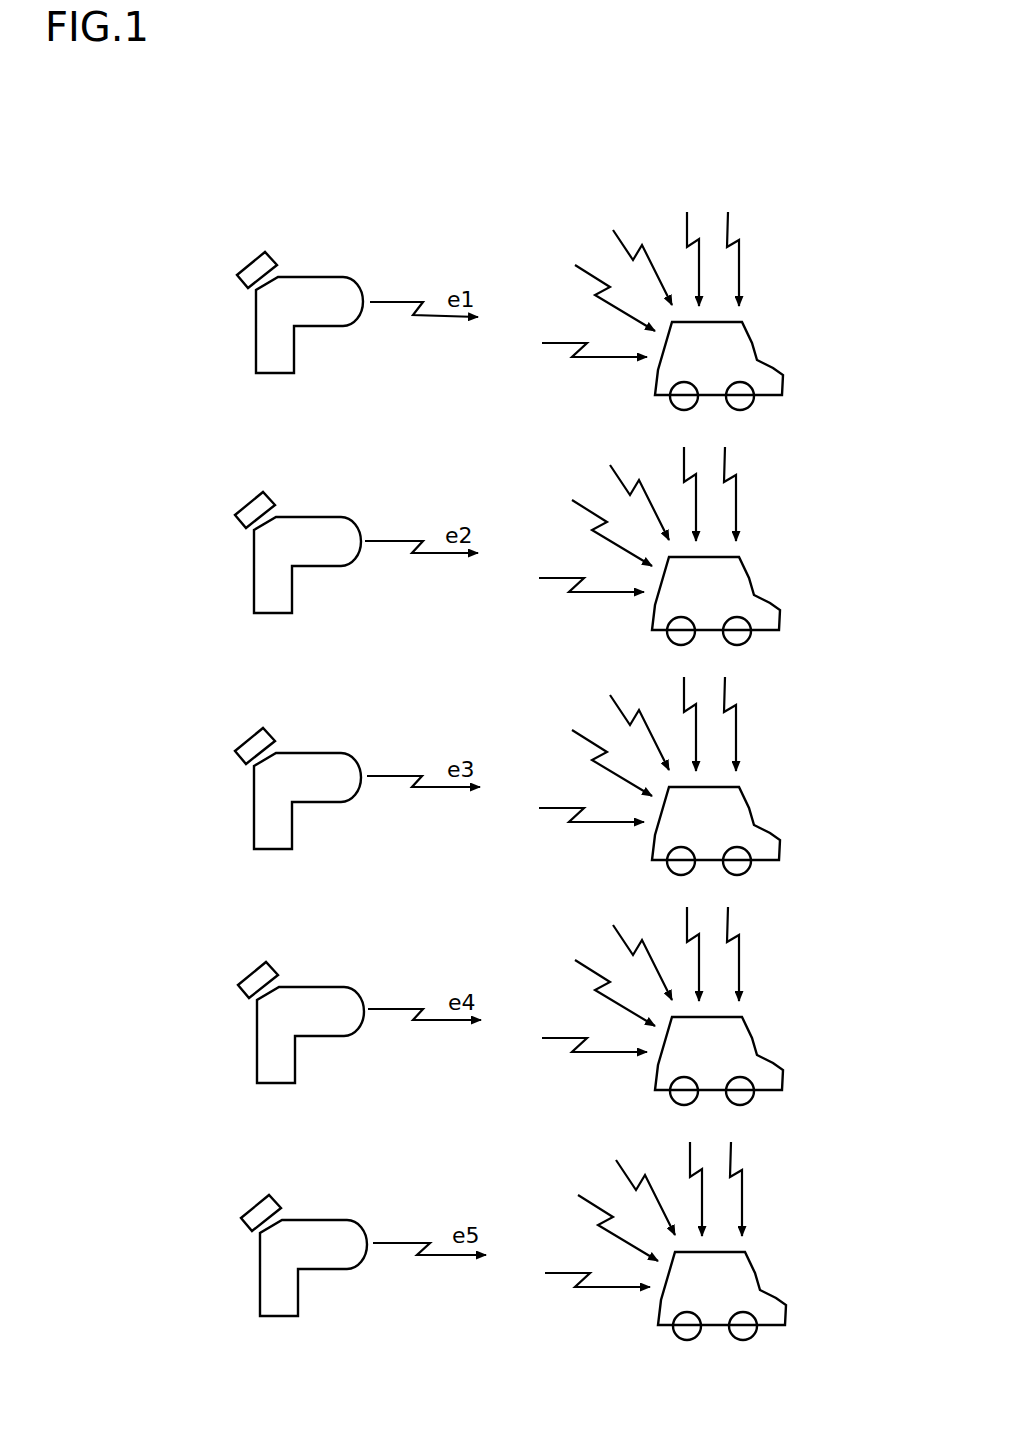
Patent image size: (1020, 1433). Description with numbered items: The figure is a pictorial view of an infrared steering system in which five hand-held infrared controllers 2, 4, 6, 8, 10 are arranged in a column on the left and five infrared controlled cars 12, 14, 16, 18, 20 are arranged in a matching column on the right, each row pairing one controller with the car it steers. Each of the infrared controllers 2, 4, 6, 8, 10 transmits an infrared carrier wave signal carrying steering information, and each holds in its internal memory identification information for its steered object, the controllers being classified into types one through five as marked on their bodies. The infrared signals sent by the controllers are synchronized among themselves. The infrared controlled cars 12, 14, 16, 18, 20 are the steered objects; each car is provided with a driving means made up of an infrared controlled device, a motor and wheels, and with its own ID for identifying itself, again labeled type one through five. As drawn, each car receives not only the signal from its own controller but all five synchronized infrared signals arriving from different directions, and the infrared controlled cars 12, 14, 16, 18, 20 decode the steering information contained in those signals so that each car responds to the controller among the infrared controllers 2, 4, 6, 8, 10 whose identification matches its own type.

The infrared controller 2 is at (255, 345).
The infrared controller 4 is at (254, 585).
The infrared controller 6 is at (254, 820).
The infrared controller 8 is at (258, 1055).
The infrared controller 10 is at (260, 1288).
The infrared controlled car 12 is at (773, 382).
The infrared controlled car 14 is at (772, 613).
The infrared controlled car 16 is at (772, 845).
The infrared controlled car 18 is at (773, 1075).
The infrared controlled car 20 is at (778, 1310).